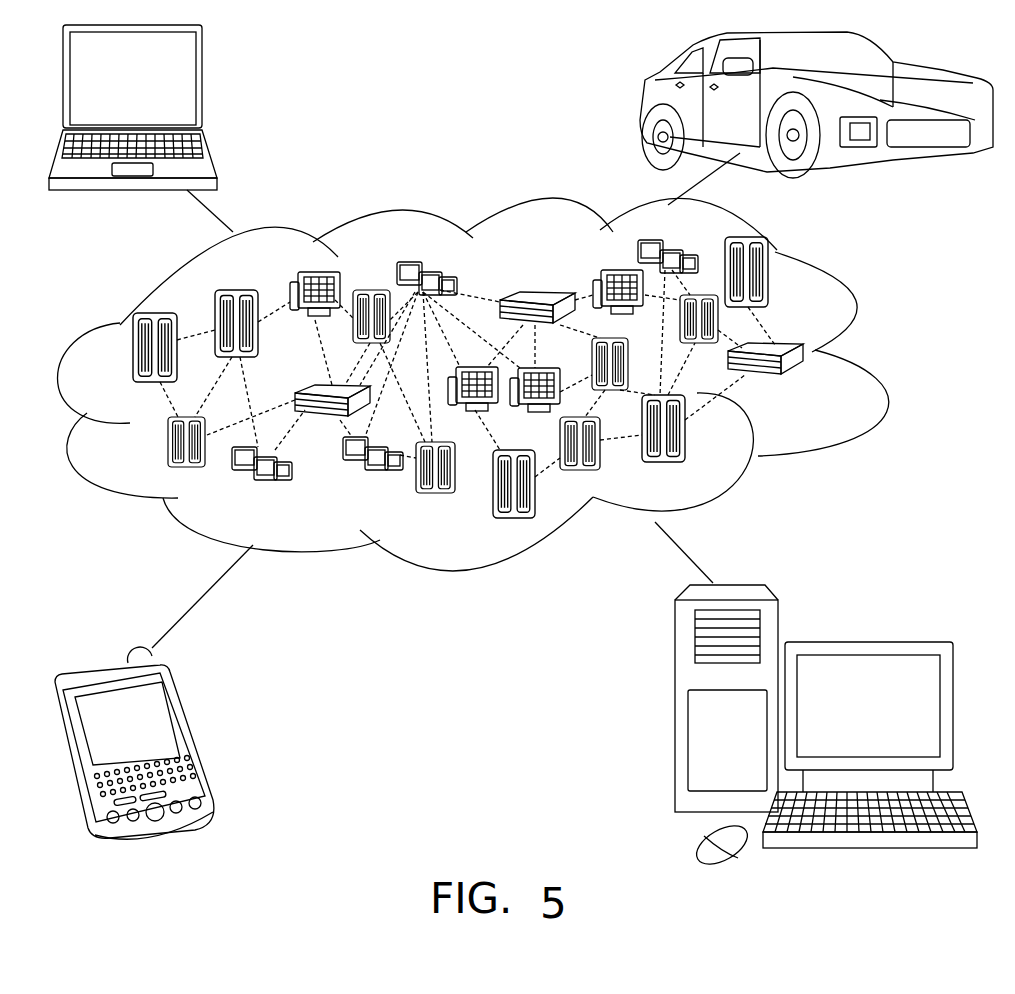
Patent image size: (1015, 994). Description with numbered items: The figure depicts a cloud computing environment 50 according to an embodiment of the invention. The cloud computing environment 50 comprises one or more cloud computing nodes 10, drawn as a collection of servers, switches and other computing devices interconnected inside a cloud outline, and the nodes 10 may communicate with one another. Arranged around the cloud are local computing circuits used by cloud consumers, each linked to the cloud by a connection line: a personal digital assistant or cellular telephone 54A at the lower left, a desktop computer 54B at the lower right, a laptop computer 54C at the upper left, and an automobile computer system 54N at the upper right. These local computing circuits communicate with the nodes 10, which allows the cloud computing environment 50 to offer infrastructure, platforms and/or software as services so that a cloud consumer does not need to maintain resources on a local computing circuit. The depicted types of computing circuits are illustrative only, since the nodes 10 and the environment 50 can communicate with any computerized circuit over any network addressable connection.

The laptop computer 54C is at (203, 90).
The automobile computer system 54N is at (646, 108).
The personal digital assistant (PDA) or cellular telephone 54A is at (190, 735).
The desktop computer 54B is at (863, 641).
The cloud computing environment 50 is at (866, 351).
The cloud computing nodes 10 is at (812, 388).